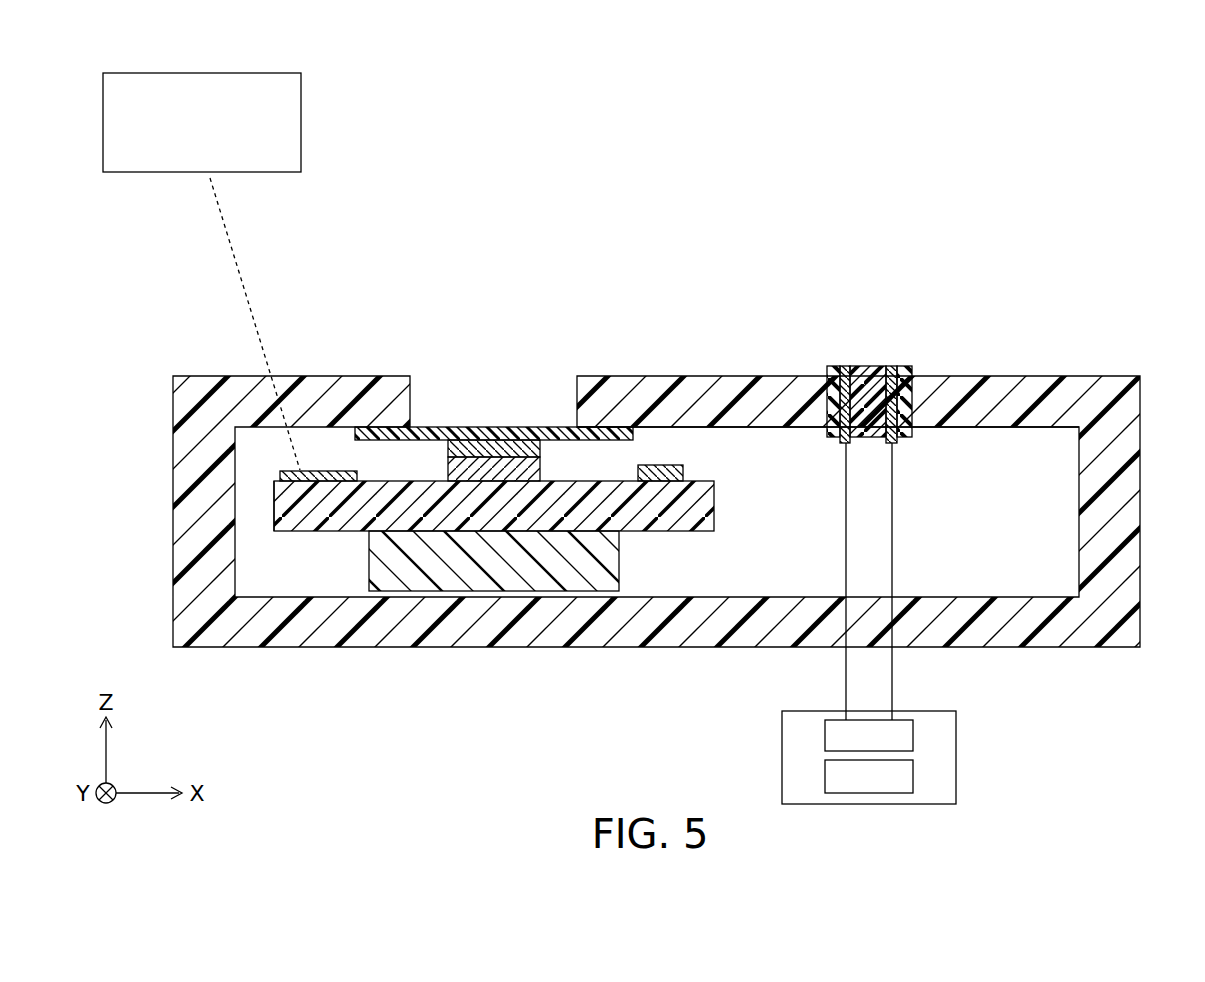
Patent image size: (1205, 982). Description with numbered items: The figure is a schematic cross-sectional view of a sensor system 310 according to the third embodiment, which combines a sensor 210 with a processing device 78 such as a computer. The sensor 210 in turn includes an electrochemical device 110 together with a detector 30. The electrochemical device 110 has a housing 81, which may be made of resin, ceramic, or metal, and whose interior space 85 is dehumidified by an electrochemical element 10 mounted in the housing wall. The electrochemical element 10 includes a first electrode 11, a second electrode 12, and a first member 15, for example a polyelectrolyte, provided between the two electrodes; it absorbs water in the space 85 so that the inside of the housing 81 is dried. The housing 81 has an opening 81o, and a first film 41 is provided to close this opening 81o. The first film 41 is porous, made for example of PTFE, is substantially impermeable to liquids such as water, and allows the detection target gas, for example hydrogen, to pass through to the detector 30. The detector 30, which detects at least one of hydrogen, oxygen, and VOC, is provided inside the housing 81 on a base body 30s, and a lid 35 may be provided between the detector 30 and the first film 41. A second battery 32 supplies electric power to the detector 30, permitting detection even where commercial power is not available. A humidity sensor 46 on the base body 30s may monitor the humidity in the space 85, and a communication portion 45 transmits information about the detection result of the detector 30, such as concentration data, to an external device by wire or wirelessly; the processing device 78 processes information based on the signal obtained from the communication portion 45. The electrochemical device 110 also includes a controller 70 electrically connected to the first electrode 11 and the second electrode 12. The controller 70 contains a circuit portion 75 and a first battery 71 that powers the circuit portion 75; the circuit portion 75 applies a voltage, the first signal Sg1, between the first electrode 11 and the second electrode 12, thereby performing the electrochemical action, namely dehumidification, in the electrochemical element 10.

The processing device 78 is at (302, 130).
The sensor system 310 is at (941, 200).
The electrochemical device 110 is at (1100, 332).
The sensor 210 is at (208, 335).
The housing 81 is at (1108, 635).
The opening 81o is at (576, 400).
The space 85 is at (963, 427).
The first film 41 is at (458, 426).
The lid 35 is at (473, 450).
The detector 30 is at (518, 465).
The base body 30s is at (305, 502).
The second battery 32 is at (503, 557).
The communication portion 45 is at (297, 475).
The humidity sensor 46 is at (660, 472).
The electrochemical element 10 is at (785, 300).
The second electrode 12 is at (838, 377).
The first member 15 is at (873, 385).
The first electrode 11 is at (898, 374).
The first signal Sg1 is at (892, 686).
The controller 70 is at (958, 752).
The circuit portion 75 is at (825, 725).
The first battery 71 is at (825, 768).